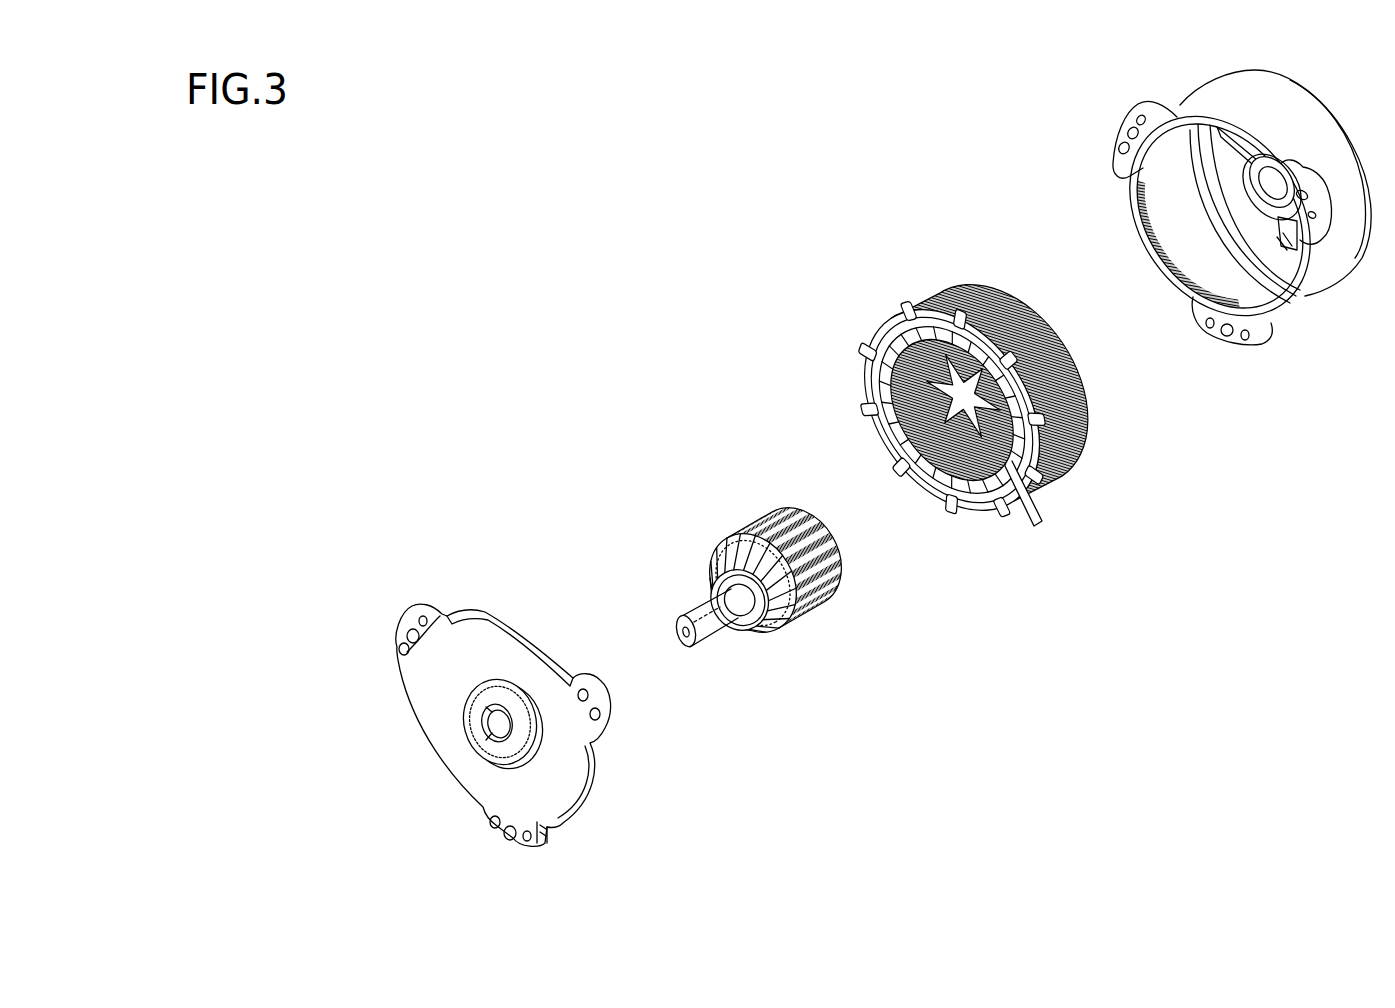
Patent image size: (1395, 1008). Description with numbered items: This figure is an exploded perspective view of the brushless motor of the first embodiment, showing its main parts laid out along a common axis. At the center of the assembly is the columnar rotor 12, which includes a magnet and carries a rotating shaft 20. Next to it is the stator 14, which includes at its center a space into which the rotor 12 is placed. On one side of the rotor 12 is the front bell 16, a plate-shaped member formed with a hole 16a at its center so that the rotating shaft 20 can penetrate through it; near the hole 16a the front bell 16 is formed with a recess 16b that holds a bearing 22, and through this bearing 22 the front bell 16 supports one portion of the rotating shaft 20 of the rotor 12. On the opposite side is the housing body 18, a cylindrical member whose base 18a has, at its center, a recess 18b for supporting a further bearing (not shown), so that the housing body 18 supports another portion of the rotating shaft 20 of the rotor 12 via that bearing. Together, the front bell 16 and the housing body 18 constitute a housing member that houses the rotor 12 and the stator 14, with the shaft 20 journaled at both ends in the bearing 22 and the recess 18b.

The rotor 12 is at (766, 614).
The stator 14 is at (1051, 543).
The front bell 16 is at (520, 725).
The hole 16a is at (488, 731).
The recess 16b is at (507, 743).
The housing body 18 is at (1232, 254).
The base 18a is at (1247, 203).
The recess 18b is at (1276, 200).
The rotating shaft 20 is at (721, 619).
The bearing 22 is at (745, 624).